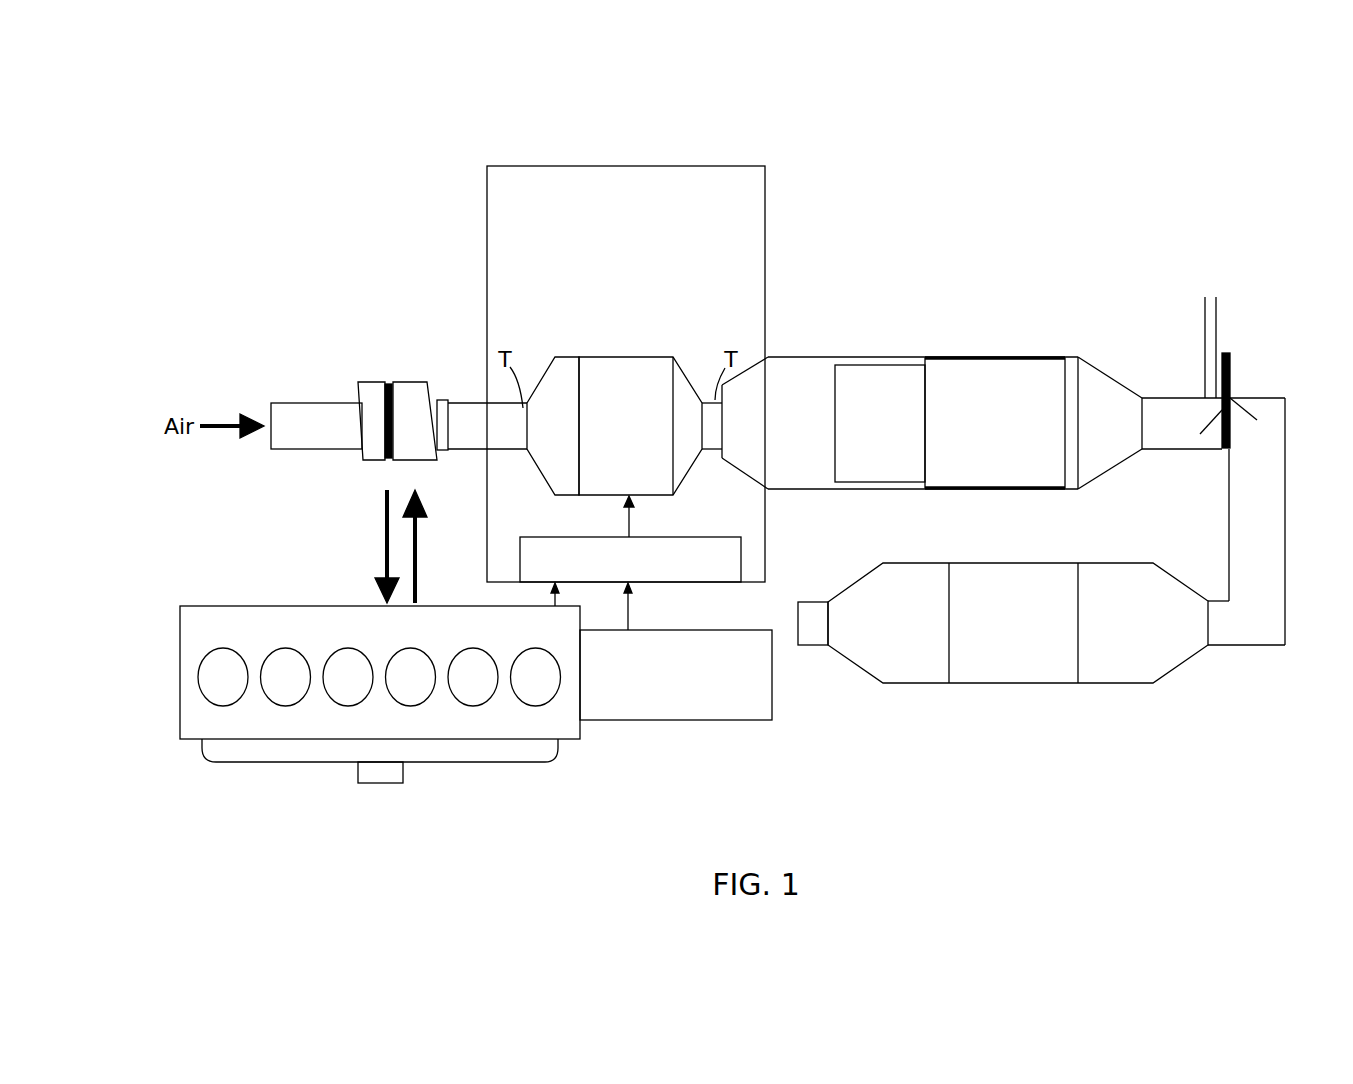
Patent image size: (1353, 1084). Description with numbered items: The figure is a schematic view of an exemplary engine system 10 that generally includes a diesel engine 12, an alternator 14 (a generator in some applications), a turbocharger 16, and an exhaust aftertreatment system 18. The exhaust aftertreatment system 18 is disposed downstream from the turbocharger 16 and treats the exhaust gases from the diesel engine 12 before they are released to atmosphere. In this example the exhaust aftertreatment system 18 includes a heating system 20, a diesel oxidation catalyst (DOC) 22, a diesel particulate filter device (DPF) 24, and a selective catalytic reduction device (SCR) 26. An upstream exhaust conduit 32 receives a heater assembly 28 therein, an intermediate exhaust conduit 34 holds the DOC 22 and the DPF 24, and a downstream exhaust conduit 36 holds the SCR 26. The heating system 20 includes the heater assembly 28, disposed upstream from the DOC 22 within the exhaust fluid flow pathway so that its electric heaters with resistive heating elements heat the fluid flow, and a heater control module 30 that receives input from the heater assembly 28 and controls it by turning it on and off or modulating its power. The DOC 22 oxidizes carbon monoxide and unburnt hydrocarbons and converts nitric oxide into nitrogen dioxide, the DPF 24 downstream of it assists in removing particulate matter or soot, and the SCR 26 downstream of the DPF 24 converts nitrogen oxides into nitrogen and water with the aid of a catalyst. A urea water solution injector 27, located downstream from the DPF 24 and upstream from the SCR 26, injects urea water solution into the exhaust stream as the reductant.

The engine system 10 is at (1160, 139).
The diesel engine 12 is at (180, 650).
The alternator 14 is at (720, 720).
The turbocharger 16 is at (372, 381).
The exhaust aftertreatment system 18 is at (990, 216).
The heating system 20 is at (632, 166).
The diesel oxidation catalyst (DOC) 22 is at (857, 370).
The diesel particulate filter device (DPF) 24 is at (995, 362).
The selective catalytic reduction device (SCR) 26 is at (1010, 683).
The urea water solution injector 27 is at (1217, 330).
The heater assembly 28 is at (668, 362).
The heater control module 30 is at (738, 568).
The upstream exhaust conduit 32 is at (545, 362).
The intermediate exhaust conduit 34 is at (782, 357).
The downstream exhaust conduit 36 is at (1108, 683).